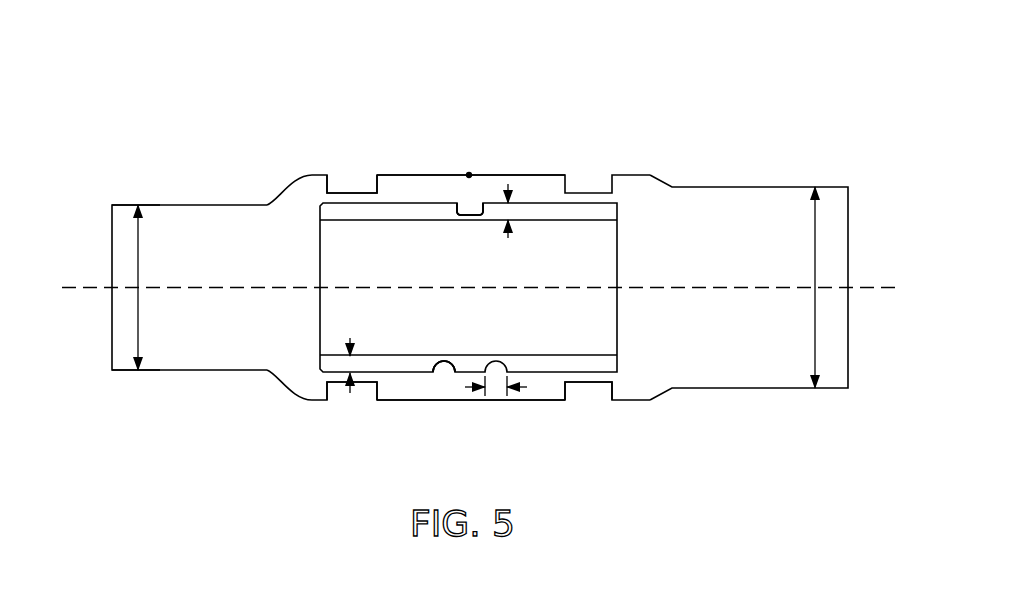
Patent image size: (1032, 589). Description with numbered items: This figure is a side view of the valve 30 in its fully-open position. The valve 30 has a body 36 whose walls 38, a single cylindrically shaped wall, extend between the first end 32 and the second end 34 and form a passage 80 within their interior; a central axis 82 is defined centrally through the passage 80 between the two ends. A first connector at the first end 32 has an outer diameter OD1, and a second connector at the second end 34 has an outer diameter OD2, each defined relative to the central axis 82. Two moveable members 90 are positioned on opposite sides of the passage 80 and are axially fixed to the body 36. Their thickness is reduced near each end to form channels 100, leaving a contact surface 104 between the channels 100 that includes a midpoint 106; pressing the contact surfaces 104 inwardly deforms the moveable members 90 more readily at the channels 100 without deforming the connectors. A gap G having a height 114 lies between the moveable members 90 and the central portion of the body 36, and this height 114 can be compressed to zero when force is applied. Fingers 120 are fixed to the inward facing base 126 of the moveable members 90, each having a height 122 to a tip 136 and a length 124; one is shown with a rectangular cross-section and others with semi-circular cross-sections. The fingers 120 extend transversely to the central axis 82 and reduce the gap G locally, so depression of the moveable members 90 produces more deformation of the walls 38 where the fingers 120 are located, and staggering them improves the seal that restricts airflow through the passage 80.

The valve 30 is at (787, 47).
The first end 32 is at (95, 215).
The second end 34 is at (861, 164).
The body 36 is at (132, 190).
The walls 38 is at (372, 353).
The passage 80 is at (98, 360).
The central axis 82 is at (88, 290).
The moveable members 90 is at (427, 114).
The channels 100 is at (350, 179).
The contact surface 104 is at (555, 175).
The midpoint 106 is at (469, 173).
The height 114 is at (348, 380).
The fingers 120 is at (476, 200).
The heights 122 is at (510, 224).
The lengths 124 is at (497, 388).
The base 126 is at (421, 208).
The tip 136 is at (461, 216).
The gap G is at (348, 378).
The outer diameter OD1 is at (140, 320).
The outer diameter OD2 is at (813, 322).